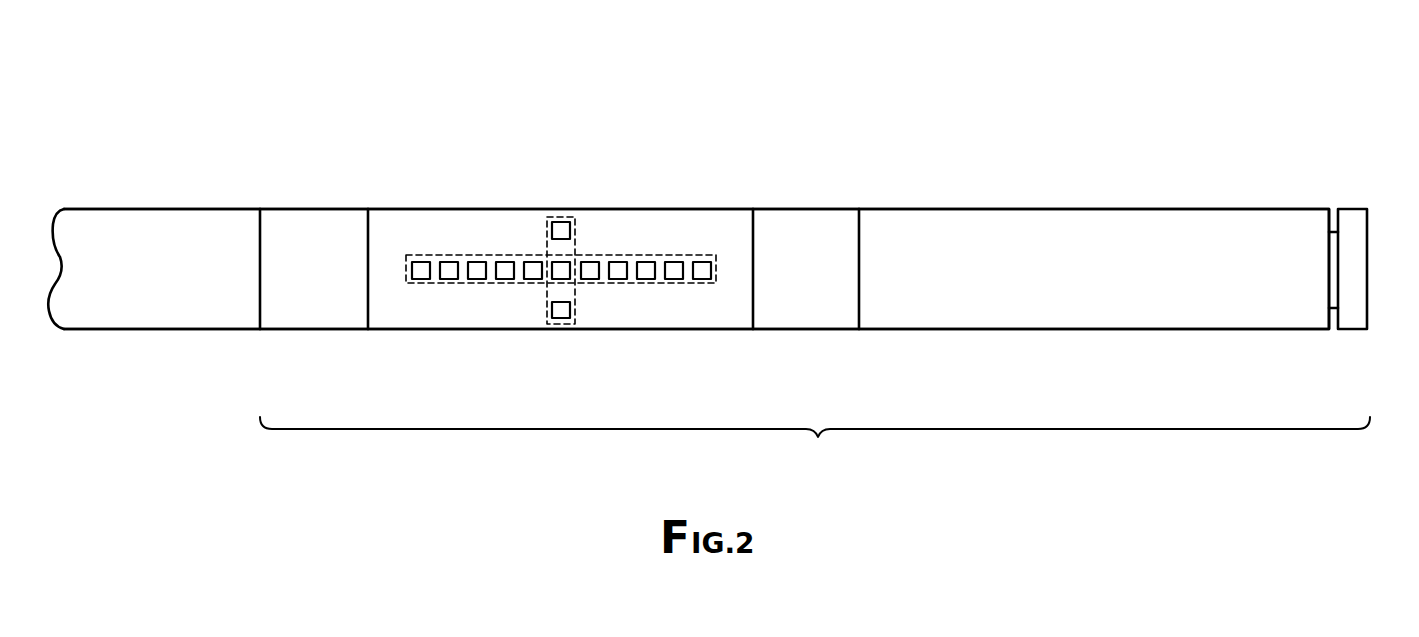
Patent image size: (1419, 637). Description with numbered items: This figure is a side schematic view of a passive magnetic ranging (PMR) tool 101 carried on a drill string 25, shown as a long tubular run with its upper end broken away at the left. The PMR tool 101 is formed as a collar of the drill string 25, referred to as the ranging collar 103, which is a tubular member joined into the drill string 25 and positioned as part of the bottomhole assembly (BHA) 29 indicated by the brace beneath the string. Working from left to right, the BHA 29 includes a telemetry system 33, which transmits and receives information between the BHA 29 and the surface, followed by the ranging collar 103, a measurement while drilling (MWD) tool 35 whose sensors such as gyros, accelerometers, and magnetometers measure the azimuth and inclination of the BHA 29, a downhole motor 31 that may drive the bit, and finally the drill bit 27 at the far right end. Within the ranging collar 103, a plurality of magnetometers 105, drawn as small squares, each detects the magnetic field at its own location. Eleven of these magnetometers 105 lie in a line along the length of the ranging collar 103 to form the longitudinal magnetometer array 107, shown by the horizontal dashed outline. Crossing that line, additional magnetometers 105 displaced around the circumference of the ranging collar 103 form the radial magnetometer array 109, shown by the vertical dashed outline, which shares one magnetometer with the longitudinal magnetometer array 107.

The passive magnetic ranging (PMR) tool 101 is at (681, 92).
The drill string 25 is at (104, 209).
The telemetry system 33 is at (284, 209).
The ranging collar 103 is at (652, 330).
The longitudinal magnetometer array 107 is at (476, 255).
The magnetometers 105 is at (422, 280).
The radial magnetometer array 109 is at (547, 232).
The measurement while drilling (MWD) tool 35 is at (828, 209).
The downhole motor 31 is at (1127, 209).
The drill bit 27 is at (1350, 209).
The bottomhole assembly (BHA) 29 is at (818, 437).